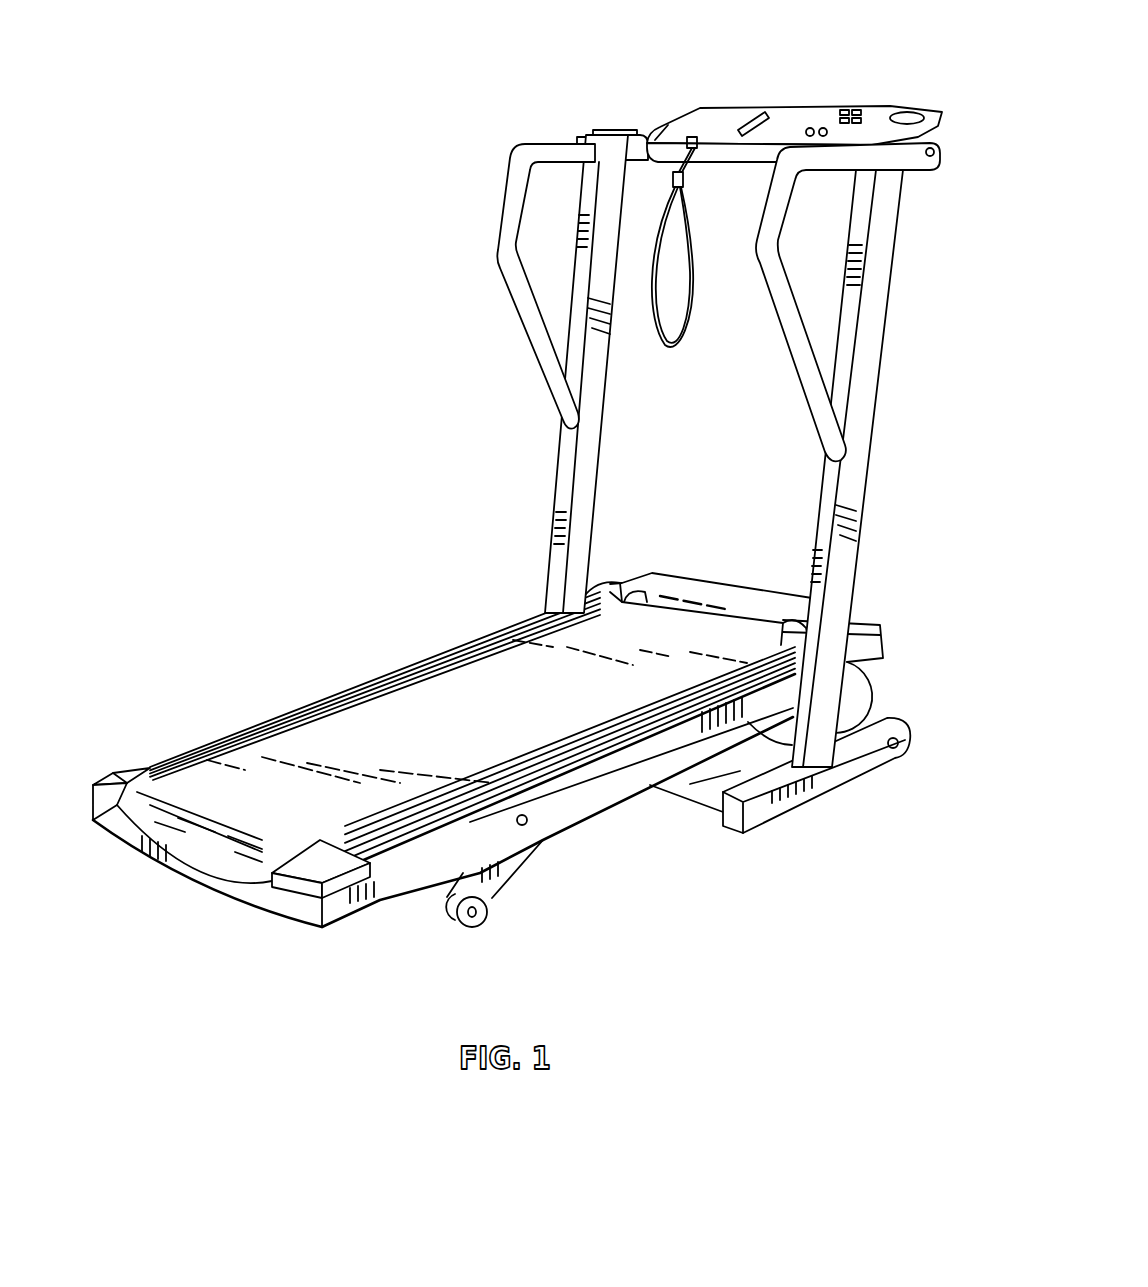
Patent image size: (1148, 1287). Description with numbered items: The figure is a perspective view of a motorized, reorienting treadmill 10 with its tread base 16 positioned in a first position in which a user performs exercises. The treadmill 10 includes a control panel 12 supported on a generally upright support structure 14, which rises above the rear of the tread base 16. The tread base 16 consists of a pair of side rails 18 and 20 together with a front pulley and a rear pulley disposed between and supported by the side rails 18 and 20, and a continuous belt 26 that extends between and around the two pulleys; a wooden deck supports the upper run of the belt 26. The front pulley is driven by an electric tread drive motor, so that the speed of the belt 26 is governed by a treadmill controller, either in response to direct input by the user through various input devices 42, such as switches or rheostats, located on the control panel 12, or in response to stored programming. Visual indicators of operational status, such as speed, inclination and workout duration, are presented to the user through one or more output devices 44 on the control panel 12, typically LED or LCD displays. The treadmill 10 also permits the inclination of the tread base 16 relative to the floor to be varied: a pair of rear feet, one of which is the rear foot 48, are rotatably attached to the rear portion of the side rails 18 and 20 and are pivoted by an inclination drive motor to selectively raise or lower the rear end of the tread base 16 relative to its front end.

The treadmill 10 is at (524, 486).
The control panel 12 is at (759, 177).
The upright support structure 14 is at (862, 442).
The tread base 16 is at (193, 872).
The side rail 18 is at (317, 700).
The side rail 20 is at (587, 787).
The continuous belt 26 is at (455, 688).
The input devices 42 is at (753, 118).
The output devices 44 is at (857, 100).
The rear foot 48 is at (477, 927).